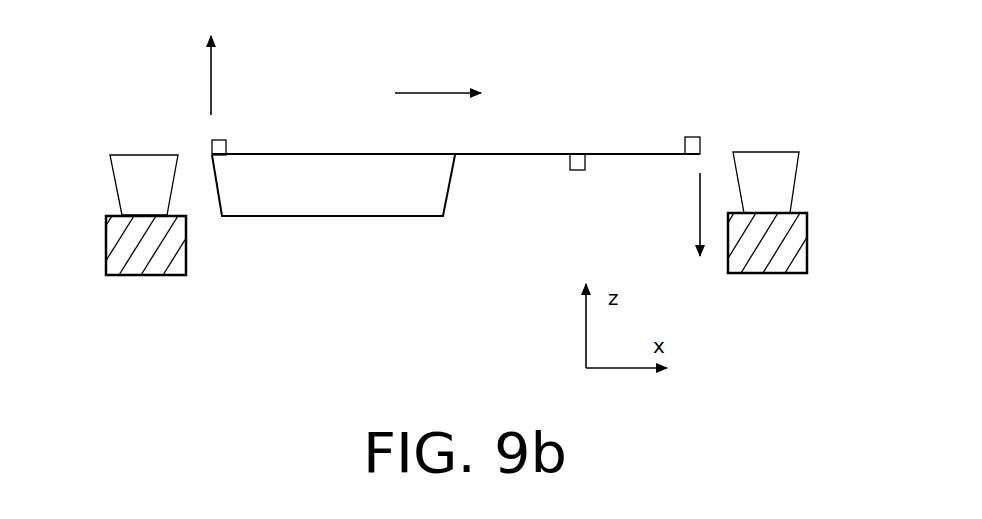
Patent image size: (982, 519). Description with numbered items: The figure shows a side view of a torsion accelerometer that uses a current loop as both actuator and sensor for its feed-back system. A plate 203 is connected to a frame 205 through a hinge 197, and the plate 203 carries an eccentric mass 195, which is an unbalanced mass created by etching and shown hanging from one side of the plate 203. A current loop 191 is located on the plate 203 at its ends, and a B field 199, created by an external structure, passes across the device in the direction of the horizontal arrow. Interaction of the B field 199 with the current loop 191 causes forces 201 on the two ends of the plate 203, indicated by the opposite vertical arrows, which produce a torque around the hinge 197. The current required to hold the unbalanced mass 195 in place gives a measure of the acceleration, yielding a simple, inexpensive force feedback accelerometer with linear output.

The current loop 191 is at (222, 140).
The eccentric mass 195 is at (310, 217).
The hinge 197 is at (580, 172).
The B field 199 is at (420, 90).
The forces 201 is at (208, 88).
The plate 203 is at (507, 152).
The frame 205 is at (128, 153).